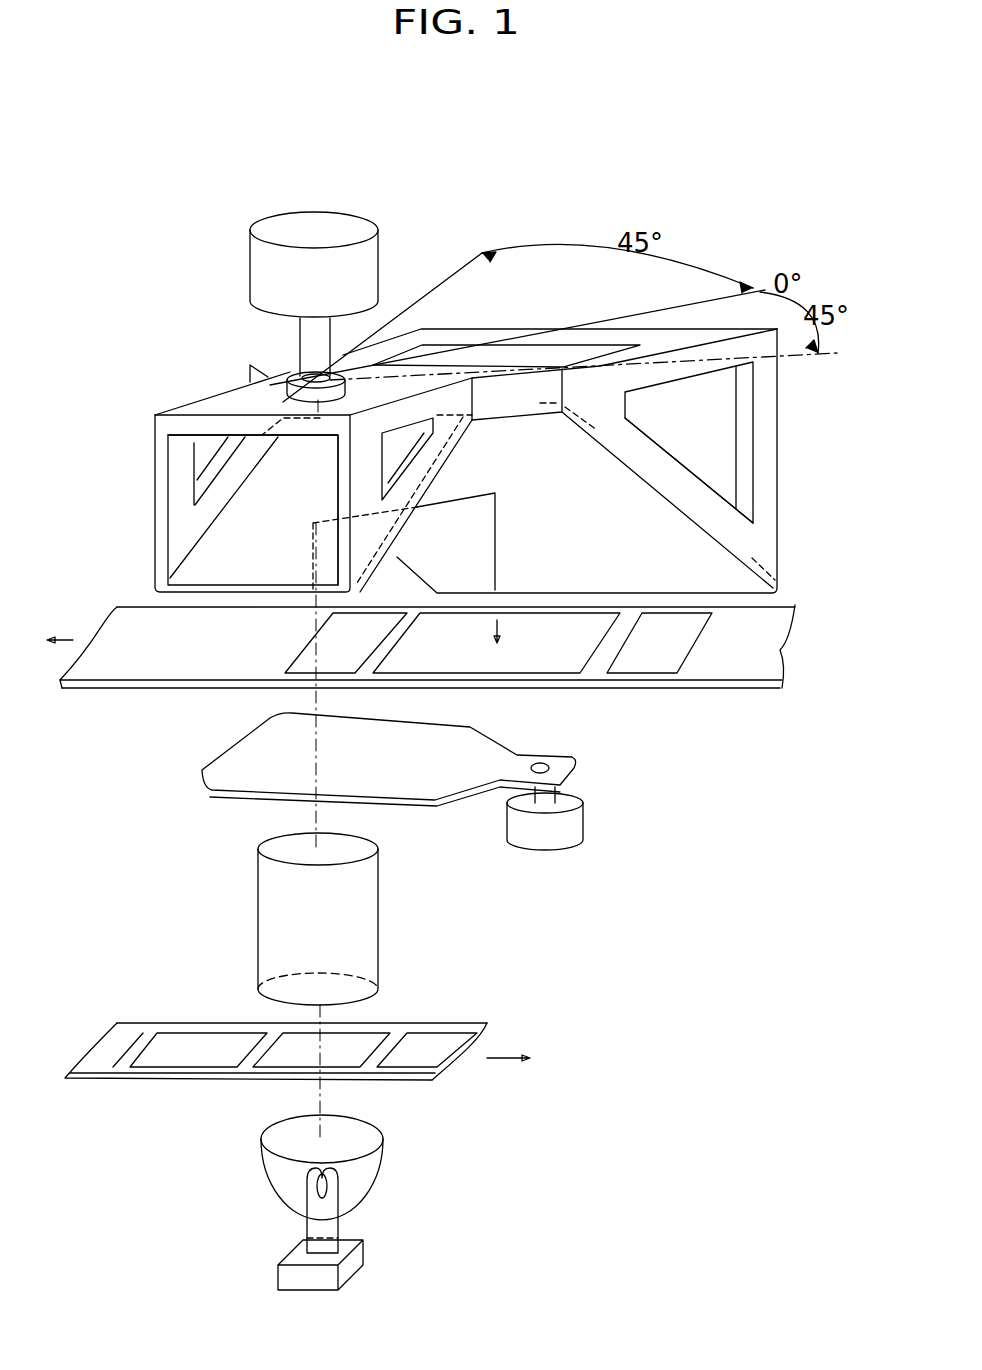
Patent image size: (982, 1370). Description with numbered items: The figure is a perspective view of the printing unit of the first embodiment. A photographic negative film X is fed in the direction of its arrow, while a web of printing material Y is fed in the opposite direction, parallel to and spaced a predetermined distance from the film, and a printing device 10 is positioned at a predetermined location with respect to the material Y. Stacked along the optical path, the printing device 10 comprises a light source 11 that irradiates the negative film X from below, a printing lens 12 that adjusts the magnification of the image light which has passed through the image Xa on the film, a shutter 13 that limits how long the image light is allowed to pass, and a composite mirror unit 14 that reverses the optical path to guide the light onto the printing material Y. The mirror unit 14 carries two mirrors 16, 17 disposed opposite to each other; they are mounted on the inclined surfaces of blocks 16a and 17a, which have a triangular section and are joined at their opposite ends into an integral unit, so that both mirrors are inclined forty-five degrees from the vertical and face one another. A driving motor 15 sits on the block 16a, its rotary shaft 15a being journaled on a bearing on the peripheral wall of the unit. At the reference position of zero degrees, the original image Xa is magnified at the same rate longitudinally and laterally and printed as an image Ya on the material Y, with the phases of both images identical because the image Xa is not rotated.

The printing device 10 is at (138, 393).
The light source 11 is at (358, 1178).
The printing lens 12 is at (358, 945).
The shutter 13 is at (413, 777).
The composite mirror unit 14 is at (207, 390).
The driving motor 15 is at (330, 226).
The rotary shaft 15a is at (318, 332).
The mirror 16 is at (253, 555).
The block 16a is at (160, 487).
The mirror 17 is at (645, 556).
The block 17a is at (765, 455).
The photographic negative film X is at (103, 1082).
The image Xa is at (288, 1055).
The printing material Y is at (112, 660).
The image Ya is at (554, 658).